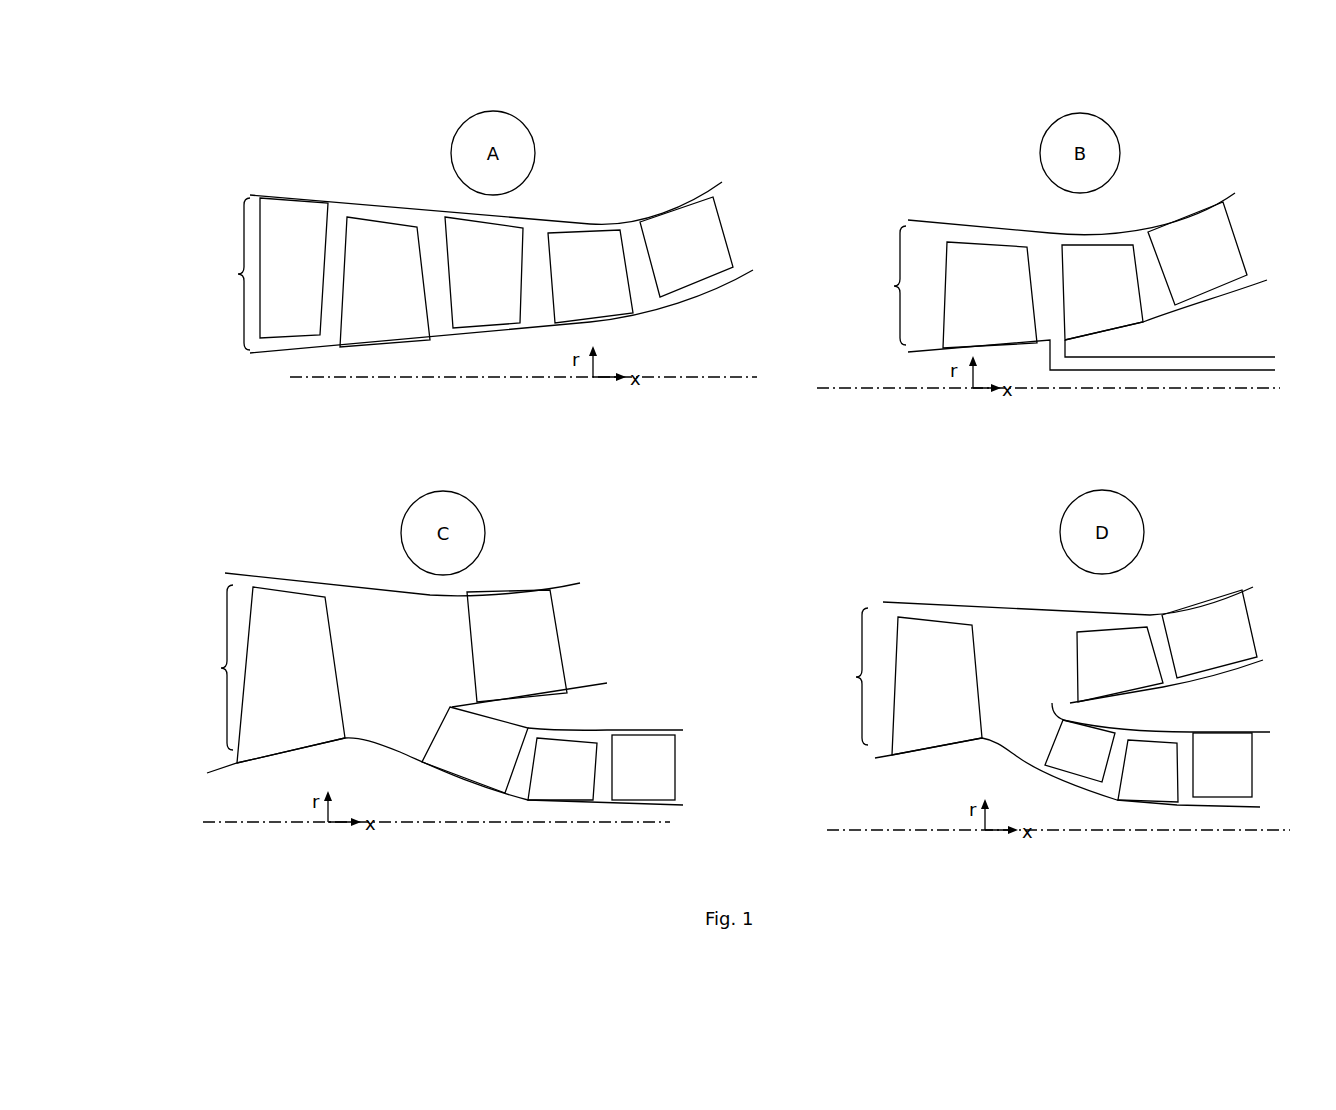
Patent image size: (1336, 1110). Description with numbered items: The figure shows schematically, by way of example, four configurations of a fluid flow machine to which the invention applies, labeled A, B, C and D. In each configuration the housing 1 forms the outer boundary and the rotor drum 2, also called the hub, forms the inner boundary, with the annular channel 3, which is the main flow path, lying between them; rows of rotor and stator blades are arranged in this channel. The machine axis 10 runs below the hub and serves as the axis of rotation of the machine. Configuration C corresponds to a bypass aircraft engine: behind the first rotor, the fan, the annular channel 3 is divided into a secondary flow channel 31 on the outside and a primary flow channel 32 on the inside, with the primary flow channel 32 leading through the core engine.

The housing 1 is at (343, 203).
The rotor drum 2 is at (267, 353).
The annular channel 3 is at (537, 240).
The machine axis 10 is at (687, 377).
The secondary flow channel 31 is at (573, 612).
The primary flow channel 32 is at (602, 795).